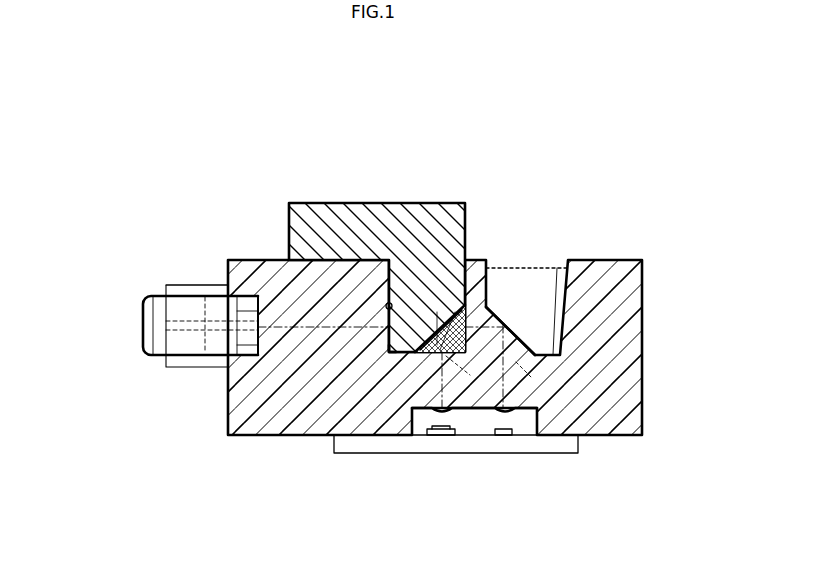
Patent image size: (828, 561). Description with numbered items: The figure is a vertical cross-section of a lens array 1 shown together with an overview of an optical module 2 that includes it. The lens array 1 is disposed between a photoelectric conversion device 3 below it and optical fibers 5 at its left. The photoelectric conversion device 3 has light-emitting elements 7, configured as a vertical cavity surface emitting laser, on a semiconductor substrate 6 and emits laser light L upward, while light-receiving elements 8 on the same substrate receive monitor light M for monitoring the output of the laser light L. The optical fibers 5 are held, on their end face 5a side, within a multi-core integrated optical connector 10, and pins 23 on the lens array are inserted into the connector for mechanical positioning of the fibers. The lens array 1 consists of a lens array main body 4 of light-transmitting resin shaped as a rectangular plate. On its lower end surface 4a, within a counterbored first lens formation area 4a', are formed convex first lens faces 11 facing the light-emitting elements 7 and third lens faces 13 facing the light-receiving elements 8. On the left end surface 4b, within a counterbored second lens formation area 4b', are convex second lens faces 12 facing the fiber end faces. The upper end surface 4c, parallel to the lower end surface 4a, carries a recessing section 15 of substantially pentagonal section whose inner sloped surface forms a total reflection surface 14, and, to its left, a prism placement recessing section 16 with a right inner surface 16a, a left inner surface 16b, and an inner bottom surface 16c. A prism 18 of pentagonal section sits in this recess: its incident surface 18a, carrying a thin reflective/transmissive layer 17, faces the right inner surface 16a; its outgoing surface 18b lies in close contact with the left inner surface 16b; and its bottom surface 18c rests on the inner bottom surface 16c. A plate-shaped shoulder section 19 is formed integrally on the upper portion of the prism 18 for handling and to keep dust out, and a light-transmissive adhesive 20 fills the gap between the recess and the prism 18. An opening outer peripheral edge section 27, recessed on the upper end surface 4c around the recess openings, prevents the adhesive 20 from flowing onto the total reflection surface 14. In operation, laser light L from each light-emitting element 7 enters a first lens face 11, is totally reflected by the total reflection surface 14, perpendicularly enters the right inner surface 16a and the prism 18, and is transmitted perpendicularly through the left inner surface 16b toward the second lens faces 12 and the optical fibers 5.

The lens array 1 is at (165, 160).
The optical module 2 is at (348, 151).
The photoelectric conversion device 3 is at (625, 458).
The lens array main body 4 is at (338, 260).
The lower end surface 4a is at (360, 468).
The first lens formation area 4a' is at (389, 454).
The left end surface 4b is at (198, 409).
The second lens formation area 4b' is at (199, 380).
The upper end surface 4c is at (287, 258).
The optical fibers 5 is at (183, 324).
The end face 5a is at (217, 318).
The semiconductor substrate 6 is at (581, 447).
The light-emitting elements 7 is at (505, 433).
The light-receiving elements 8 is at (456, 432).
The optical connector 10 is at (168, 282).
The first lens faces 11 is at (502, 413).
The second lens faces 12 is at (238, 292).
The third lens faces 13 is at (442, 416).
The total reflection surface 14 is at (503, 320).
The recessing section 15 is at (500, 283).
The prism placement recessing section 16 is at (418, 286).
The right inner surface 16a is at (509, 334).
The left inner surface 16b is at (386, 305).
The inner bottom surface 16c is at (389, 353).
The reflective/transmissive layer 17 is at (437, 310).
The prism 18 is at (412, 318).
The incident surface 18a is at (427, 353).
The outgoing surface 18b is at (384, 320).
The bottom surface 18c is at (400, 357).
The shoulder section 19 is at (310, 203).
The adhesive 20 is at (455, 312).
The pins 23 is at (143, 307).
The opening outer peripheral edge section 27 is at (365, 260).
The monitor light M is at (465, 372).
The laser light L is at (529, 375).